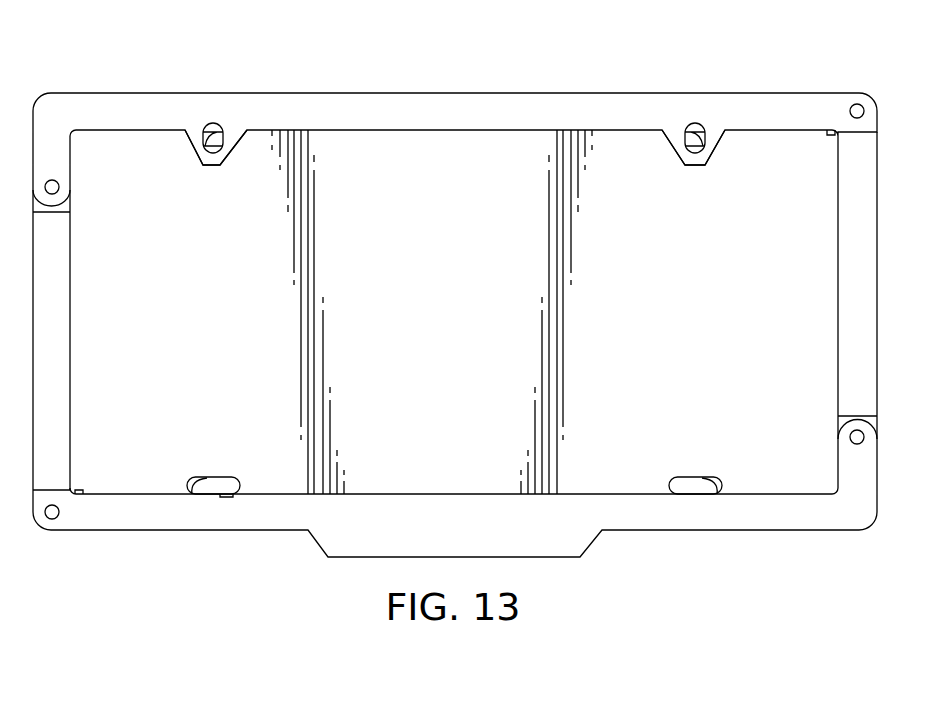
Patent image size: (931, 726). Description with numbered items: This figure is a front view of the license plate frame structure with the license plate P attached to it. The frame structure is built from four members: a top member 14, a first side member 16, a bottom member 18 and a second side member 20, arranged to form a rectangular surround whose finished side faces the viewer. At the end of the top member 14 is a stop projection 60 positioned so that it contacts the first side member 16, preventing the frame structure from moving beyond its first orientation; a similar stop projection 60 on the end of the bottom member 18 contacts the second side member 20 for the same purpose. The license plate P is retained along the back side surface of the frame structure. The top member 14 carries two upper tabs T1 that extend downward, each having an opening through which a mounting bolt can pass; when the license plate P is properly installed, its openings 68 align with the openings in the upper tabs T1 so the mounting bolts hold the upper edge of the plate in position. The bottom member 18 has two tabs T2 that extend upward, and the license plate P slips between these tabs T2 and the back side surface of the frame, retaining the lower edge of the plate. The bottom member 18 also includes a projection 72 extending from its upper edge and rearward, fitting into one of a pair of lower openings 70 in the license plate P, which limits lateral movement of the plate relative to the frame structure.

The top member 14 is at (618, 93).
The first side member 16 is at (855, 272).
The bottom member 18 is at (272, 512).
The second side member 20 is at (52, 363).
The stop projection 60 is at (828, 135).
The openings 68 is at (203, 134).
The lower openings 70 is at (193, 490).
The projection 72 is at (230, 494).
The license plate P is at (428, 167).
The upper tabs T1 is at (223, 153).
The tabs T2 is at (682, 150).